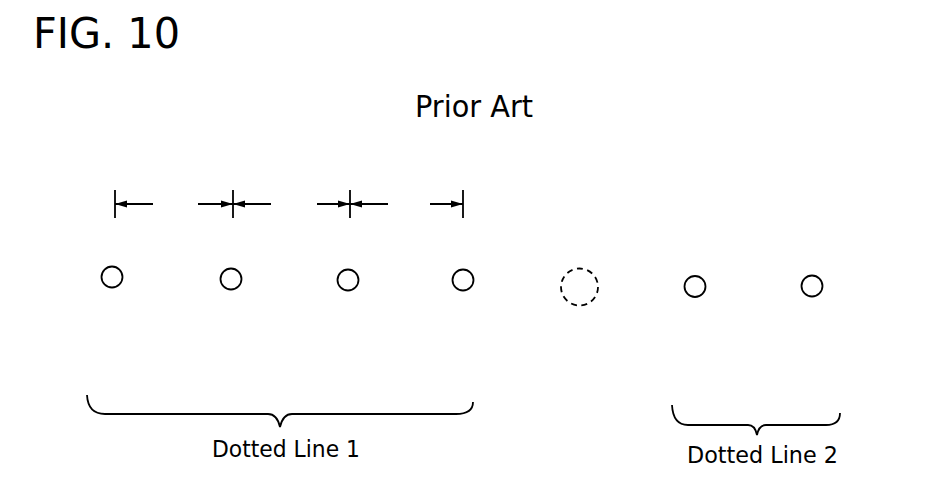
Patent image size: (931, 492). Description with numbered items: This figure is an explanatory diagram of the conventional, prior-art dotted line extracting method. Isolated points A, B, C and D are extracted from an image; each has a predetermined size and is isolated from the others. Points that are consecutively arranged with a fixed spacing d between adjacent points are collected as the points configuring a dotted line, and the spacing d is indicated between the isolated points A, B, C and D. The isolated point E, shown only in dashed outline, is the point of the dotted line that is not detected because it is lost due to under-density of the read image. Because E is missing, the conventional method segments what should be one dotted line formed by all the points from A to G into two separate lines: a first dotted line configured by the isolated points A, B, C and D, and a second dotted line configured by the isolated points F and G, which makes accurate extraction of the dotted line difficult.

The isolated point A is at (109, 298).
The isolated point B is at (231, 299).
The isolated point C is at (348, 301).
The isolated point D is at (464, 301).
The isolated point E is at (579, 304).
The isolated point F is at (695, 307).
The isolated point G is at (813, 309).
The spacing between adjacent isolated points d is at (289, 204).